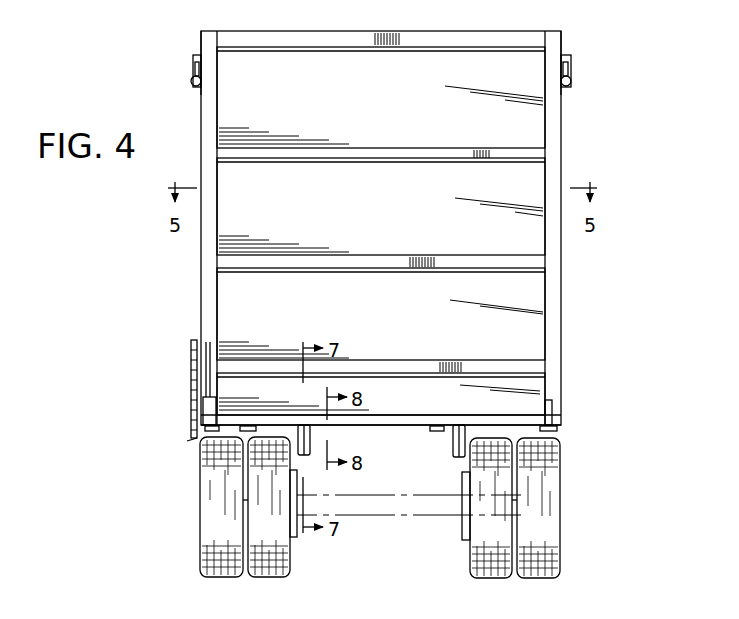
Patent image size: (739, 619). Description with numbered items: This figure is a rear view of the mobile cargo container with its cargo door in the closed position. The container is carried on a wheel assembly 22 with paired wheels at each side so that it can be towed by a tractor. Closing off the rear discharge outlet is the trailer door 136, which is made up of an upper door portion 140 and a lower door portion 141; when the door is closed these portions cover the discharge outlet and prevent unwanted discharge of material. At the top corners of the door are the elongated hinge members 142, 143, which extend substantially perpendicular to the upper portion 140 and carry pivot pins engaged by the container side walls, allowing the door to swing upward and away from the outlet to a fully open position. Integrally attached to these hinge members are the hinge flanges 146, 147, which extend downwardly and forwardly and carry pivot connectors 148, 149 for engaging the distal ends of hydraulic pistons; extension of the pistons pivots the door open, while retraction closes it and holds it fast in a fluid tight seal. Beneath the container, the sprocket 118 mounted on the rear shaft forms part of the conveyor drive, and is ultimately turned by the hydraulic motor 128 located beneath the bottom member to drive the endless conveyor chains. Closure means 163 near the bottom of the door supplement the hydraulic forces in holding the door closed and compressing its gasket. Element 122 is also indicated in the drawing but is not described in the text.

The wheel assembly 22 is at (346, 507).
The sprocket 118 is at (186, 372).
The bottom rail 122 is at (195, 436).
The hydraulic motor 128 is at (243, 450).
The trailer door 136 is at (568, 270).
The upper door portion 140 is at (535, 237).
The lower door portion 141 is at (537, 390).
The elongated hinge member 142 is at (203, 57).
The elongated hinge member 143 is at (561, 58).
The hinge flange 146 is at (193, 60).
The hinge flange 147 is at (570, 58).
The pivot connector 148 is at (192, 82).
The pivot connector 149 is at (572, 82).
The closure means 163 is at (310, 466).